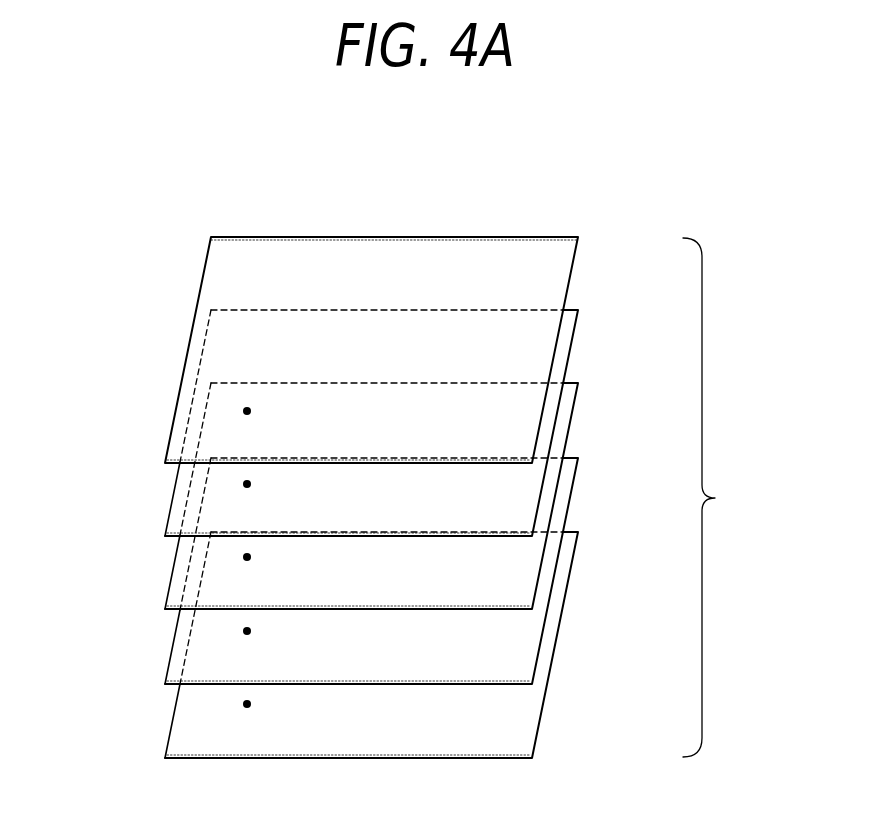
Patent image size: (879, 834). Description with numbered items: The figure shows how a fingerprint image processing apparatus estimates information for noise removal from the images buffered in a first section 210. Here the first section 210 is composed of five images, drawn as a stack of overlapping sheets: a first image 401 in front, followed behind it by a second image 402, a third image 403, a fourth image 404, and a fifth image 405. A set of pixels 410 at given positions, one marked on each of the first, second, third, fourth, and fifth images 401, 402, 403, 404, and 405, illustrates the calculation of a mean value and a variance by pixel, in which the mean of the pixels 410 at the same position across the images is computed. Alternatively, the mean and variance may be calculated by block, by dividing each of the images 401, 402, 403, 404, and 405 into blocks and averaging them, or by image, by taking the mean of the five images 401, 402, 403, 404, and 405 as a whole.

The first image 401 is at (574, 259).
The second image 402 is at (574, 333).
The third image 403 is at (574, 407).
The fourth image 404 is at (574, 480).
The fifth image 405 is at (574, 554).
The pixels 410 is at (247, 704).
The first section 210 is at (725, 497).